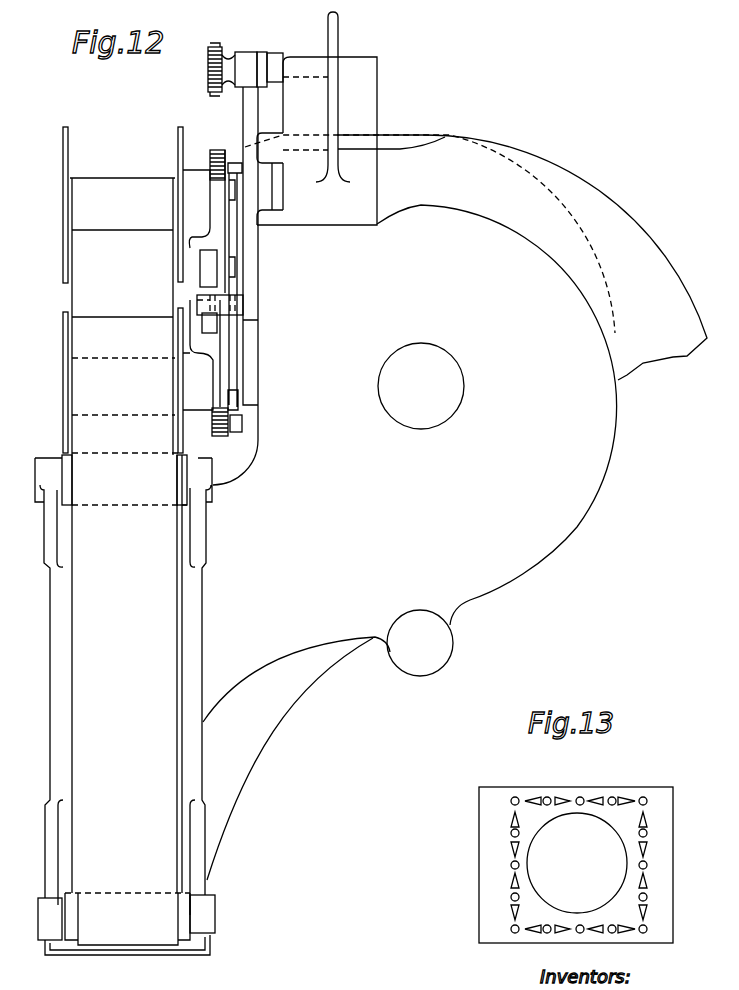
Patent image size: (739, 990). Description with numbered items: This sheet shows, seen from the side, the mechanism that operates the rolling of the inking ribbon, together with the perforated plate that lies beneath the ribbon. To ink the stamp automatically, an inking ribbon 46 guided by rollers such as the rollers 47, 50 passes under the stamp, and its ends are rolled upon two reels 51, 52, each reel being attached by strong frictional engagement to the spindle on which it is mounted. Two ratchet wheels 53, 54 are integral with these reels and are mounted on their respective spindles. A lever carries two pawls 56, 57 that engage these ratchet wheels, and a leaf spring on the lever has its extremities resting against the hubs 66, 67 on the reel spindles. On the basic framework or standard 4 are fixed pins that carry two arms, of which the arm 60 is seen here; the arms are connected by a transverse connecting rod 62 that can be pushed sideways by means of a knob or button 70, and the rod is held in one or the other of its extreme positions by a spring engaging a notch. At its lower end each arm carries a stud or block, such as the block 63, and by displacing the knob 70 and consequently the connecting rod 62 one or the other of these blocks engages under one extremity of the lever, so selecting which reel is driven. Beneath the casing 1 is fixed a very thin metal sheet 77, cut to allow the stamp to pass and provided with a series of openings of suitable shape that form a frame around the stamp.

The casing 1 is at (326, 580).
The basic framework or standard 4 is at (338, 59).
The inking ribbon 46 is at (128, 535).
The roller 47 is at (75, 915).
The roller 50 is at (68, 476).
The reel 51 is at (62, 140).
The reel 52 is at (63, 424).
The ratchet wheel 53 is at (215, 155).
The ratchet wheel 54 is at (242, 423).
The pawl 56 is at (217, 212).
The pawl 57 is at (222, 368).
The arm 60 is at (243, 108).
The transverse connecting rod 62 is at (248, 52).
The stud or block 63 is at (210, 298).
The hub 66 is at (197, 209).
The hub 67 is at (198, 355).
The knob or button 70 is at (208, 68).
The thin metal sheet 77 is at (127, 939).